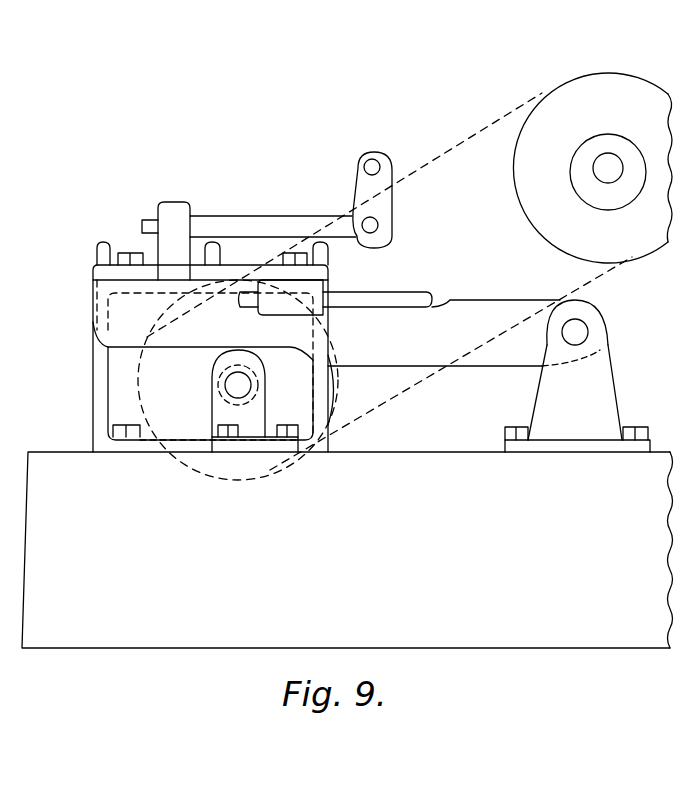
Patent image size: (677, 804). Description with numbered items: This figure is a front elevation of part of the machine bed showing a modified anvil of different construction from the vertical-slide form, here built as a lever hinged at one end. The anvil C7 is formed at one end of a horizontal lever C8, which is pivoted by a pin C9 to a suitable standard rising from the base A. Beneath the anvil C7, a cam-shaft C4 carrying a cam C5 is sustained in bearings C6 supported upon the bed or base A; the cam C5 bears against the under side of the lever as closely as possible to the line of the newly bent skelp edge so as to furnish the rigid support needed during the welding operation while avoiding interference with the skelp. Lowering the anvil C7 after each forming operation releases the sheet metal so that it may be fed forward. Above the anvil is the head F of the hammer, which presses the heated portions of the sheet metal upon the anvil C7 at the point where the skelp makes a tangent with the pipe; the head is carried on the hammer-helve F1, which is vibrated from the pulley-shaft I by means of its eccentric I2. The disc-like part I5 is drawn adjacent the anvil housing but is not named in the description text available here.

The base A is at (347, 550).
The hammer head F is at (170, 225).
The hammer-helve F1 is at (267, 200).
The cam-shaft C4 is at (232, 385).
The cam C5 is at (267, 371).
The bearings C6 is at (266, 398).
The anvil C7 is at (192, 286).
The horizontal lever C8 is at (464, 333).
The pin C9 is at (587, 323).
The pulley-shaft I is at (609, 153).
The eccentric I2 is at (570, 195).
The disc I5 is at (336, 393).